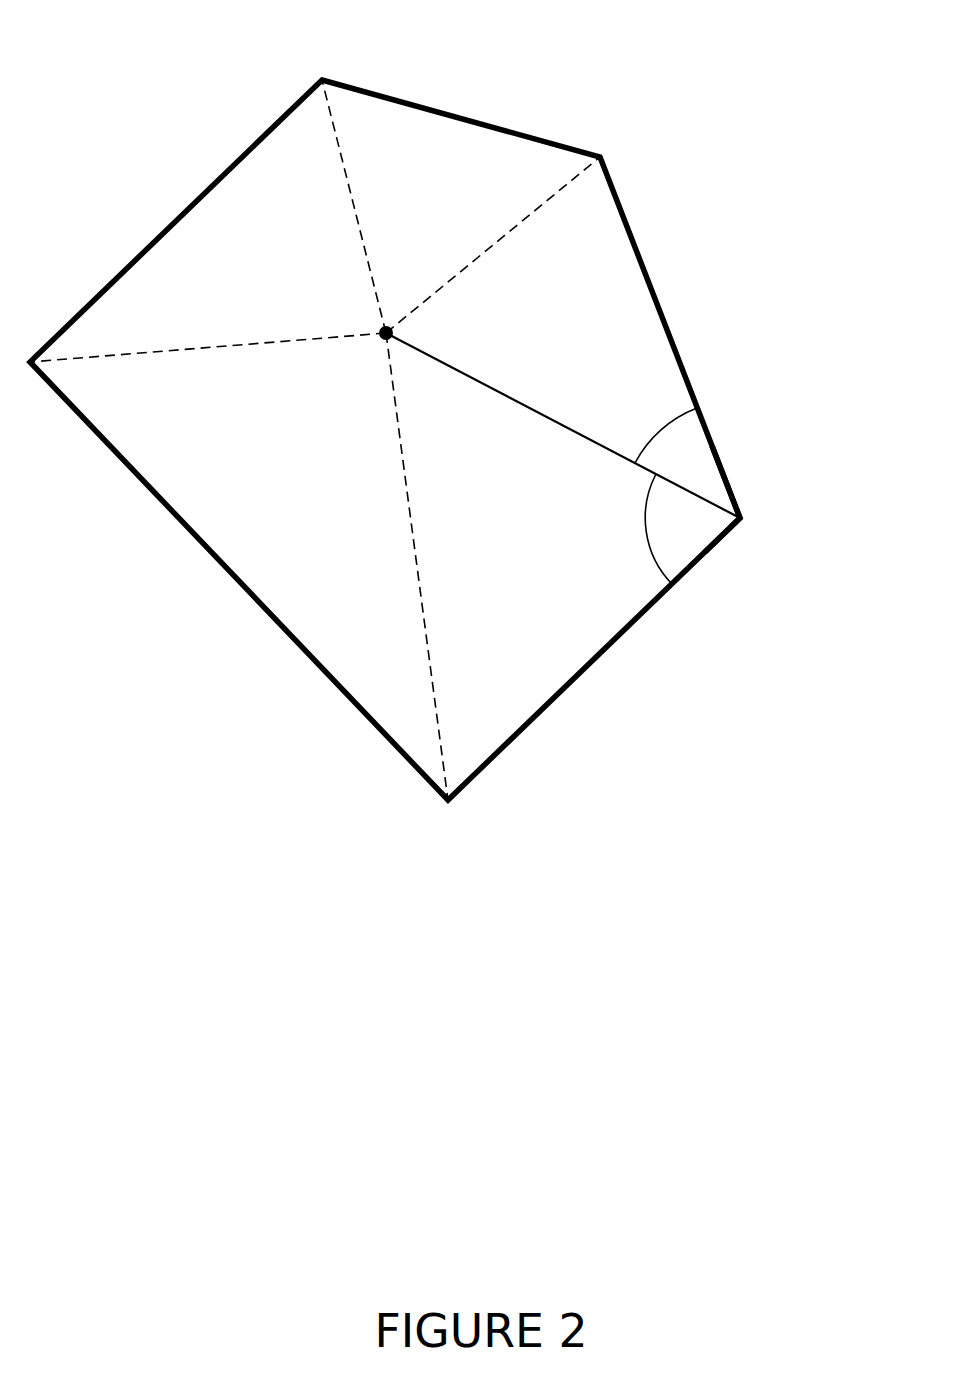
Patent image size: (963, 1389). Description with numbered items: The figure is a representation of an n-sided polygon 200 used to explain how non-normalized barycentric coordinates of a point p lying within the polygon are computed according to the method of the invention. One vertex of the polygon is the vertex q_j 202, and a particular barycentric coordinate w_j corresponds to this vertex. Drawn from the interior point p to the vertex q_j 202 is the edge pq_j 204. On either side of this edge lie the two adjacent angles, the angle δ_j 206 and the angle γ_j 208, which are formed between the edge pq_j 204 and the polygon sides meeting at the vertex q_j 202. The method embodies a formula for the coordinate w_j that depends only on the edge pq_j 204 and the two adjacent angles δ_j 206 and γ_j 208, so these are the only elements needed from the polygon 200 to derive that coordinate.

The polygon 200 is at (186, 68).
The vertex q_j 202 is at (746, 492).
The edge pq_j 204 is at (504, 368).
The angle δ_j 206 is at (620, 424).
The angle γ_j 208 is at (634, 553).